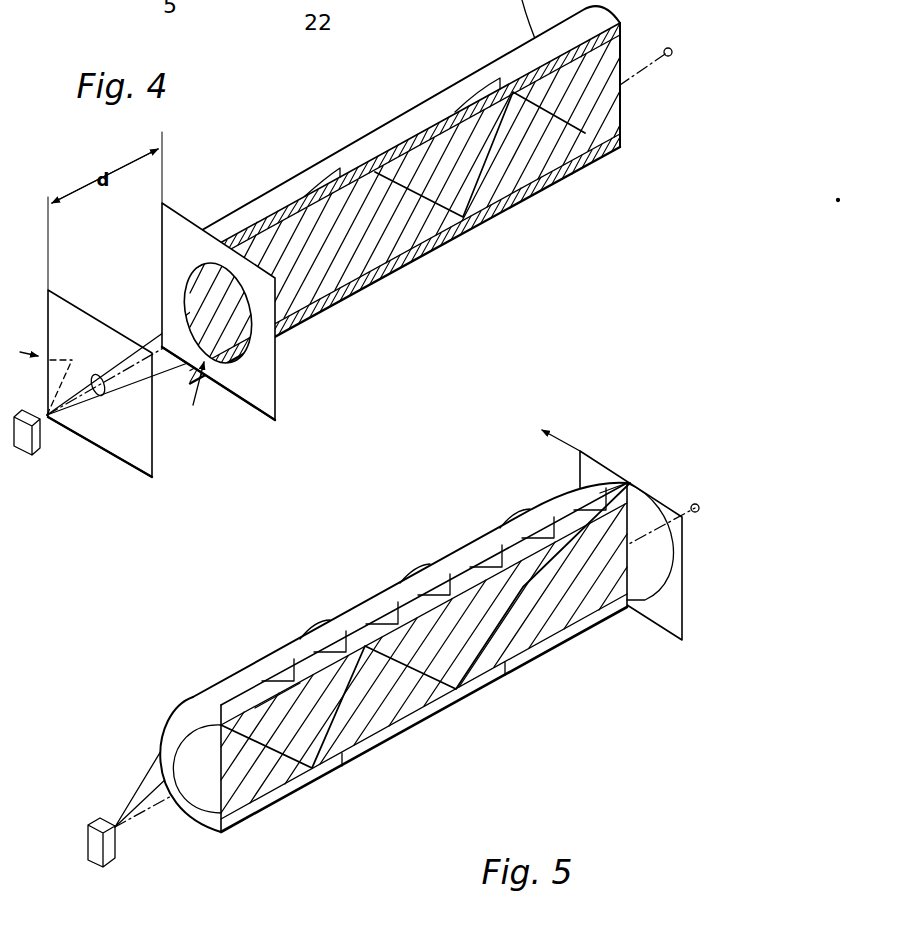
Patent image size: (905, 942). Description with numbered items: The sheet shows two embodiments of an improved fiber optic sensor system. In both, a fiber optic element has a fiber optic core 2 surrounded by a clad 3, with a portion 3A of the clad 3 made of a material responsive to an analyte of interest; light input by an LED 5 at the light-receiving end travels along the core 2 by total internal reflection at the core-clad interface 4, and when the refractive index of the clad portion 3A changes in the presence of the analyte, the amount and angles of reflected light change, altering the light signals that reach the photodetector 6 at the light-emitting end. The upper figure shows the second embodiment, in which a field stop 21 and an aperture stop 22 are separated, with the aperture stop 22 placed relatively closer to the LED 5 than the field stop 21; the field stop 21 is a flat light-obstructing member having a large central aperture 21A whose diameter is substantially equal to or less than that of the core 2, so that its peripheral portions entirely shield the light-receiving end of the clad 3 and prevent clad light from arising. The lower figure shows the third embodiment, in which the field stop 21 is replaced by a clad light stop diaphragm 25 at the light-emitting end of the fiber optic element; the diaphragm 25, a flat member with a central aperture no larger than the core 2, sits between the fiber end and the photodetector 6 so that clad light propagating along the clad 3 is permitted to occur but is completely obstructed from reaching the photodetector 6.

In FIG. 4, the fiber optic core 2 is at (513, 180).
In FIG. 5, the fiber optic core 2 is at (425, 697).
In FIG. 5, the clad 3 is at (633, 483).
In FIG. 4, the clad portion 3A is at (452, 100).
In FIG. 5, the clad portion 3A is at (445, 577).
In FIG. 5, the core-clad interface 4 is at (267, 706).
In FIG. 4, the LED 5 is at (35, 457).
In FIG. 5, the LED 5 is at (115, 867).
In FIG. 4, the photodetector 6 is at (672, 50).
In FIG. 5, the photodetector 6 is at (699, 506).
In FIG. 4, the field stop 21 is at (277, 398).
In FIG. 4, the central aperture 21A is at (258, 318).
In FIG. 4, the aperture stop 22 is at (153, 460).
In FIG. 5, the clad light stop diaphragm 25 is at (653, 617).